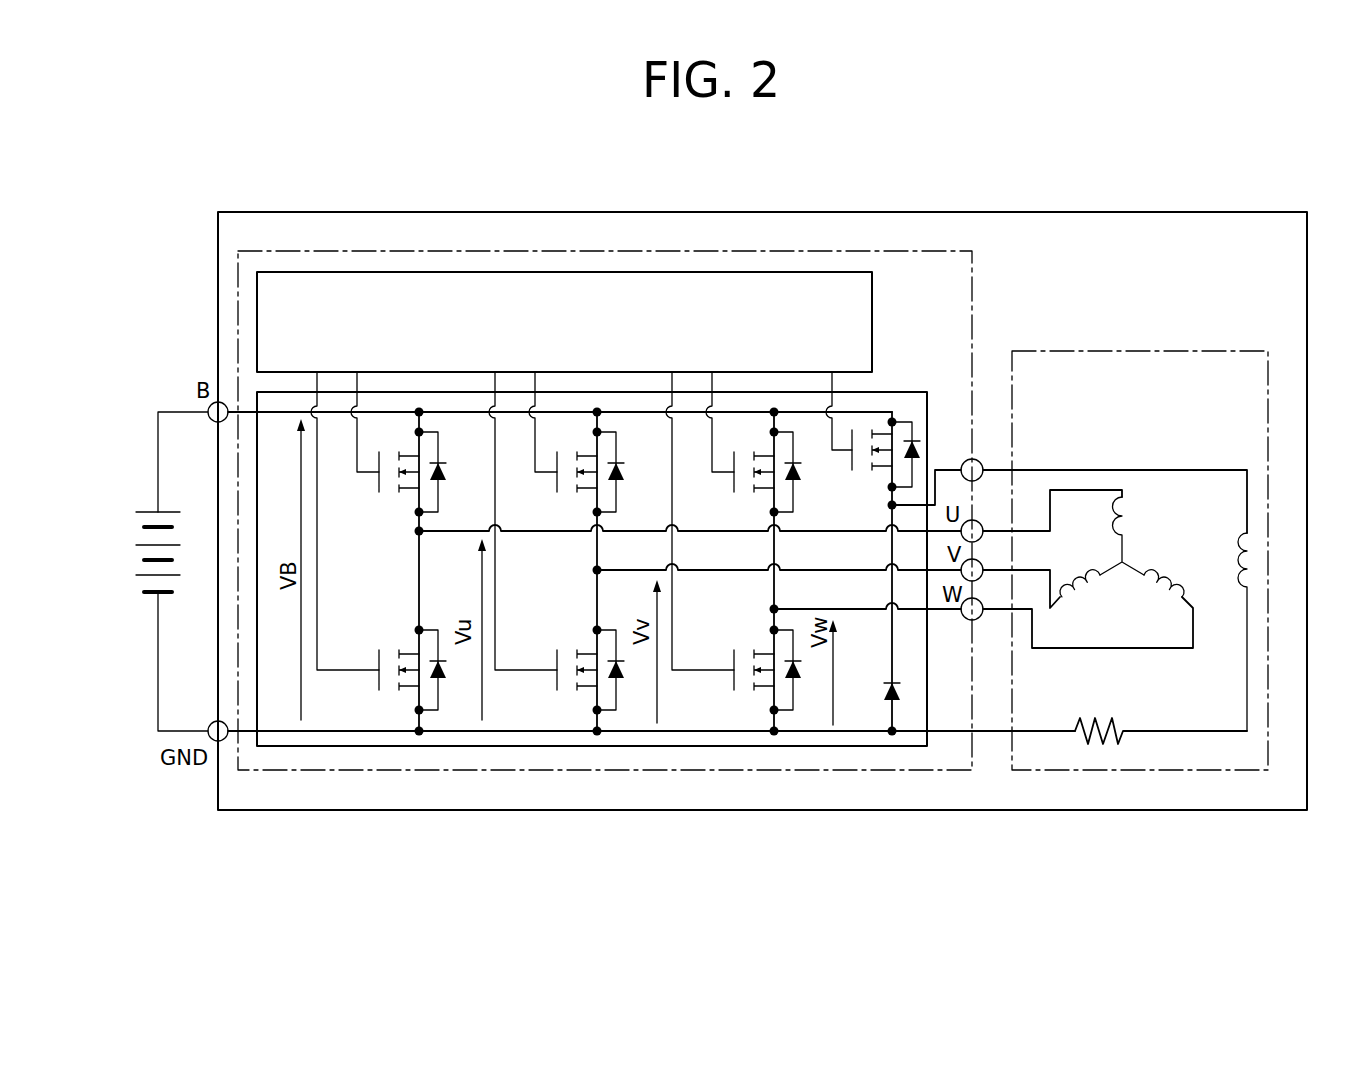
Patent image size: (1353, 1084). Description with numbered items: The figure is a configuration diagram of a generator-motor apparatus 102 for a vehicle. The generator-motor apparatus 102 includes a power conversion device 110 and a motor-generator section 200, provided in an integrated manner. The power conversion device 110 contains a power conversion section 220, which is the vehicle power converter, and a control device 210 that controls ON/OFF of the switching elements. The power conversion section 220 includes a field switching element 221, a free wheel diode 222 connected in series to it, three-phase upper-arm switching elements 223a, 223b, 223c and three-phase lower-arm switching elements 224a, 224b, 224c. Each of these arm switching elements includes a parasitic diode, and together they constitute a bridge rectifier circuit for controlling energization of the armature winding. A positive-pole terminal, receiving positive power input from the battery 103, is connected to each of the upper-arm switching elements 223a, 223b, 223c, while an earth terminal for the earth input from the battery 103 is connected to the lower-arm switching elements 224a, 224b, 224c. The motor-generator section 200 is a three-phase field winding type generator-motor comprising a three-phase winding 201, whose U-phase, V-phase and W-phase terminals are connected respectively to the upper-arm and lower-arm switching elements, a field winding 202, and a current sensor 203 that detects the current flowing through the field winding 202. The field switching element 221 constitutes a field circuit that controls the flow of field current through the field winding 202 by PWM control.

The generator-motor apparatus 102 is at (1108, 212).
The power conversion device 110 is at (264, 252).
The control device 210 is at (468, 272).
The power conversion section 220 is at (278, 746).
The motor-generator section 200 is at (1236, 351).
The three-phase winding 201 is at (1128, 500).
The field winding 202 is at (1240, 540).
The current sensor 203 is at (1099, 744).
The battery 103 is at (135, 540).
The upper-arm switching element 223a is at (388, 447).
The upper-arm switching element 223b is at (566, 447).
The upper-arm switching element 223c is at (743, 447).
The lower-arm switching element 224a is at (388, 693).
The lower-arm switching element 224b is at (567, 690).
The lower-arm switching element 224c is at (743, 690).
The field switching element 221 is at (862, 430).
The free wheel diode 222 is at (903, 690).